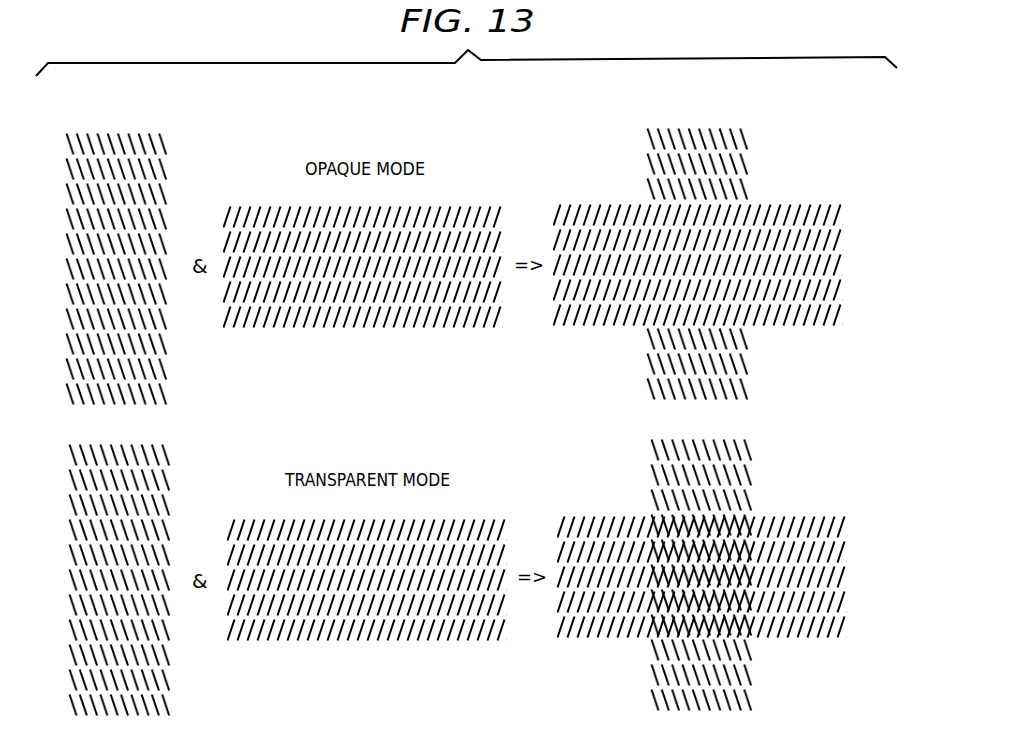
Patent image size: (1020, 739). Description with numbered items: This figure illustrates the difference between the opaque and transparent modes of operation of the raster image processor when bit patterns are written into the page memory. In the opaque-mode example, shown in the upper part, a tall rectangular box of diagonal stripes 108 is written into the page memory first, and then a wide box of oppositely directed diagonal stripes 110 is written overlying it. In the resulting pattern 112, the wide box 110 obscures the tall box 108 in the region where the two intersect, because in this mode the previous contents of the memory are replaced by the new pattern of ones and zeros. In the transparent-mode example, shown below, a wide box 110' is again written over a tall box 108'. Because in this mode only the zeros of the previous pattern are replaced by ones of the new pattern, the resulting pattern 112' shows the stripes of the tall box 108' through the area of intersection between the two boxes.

The tall rectangular box of diagonal stripes 108 is at (441, 260).
The wide box of oppositely directed diagonal stripes 110 is at (548, 245).
The resulting pattern 112 is at (823, 152).
The tall box 108' is at (447, 572).
The wide box 110' is at (556, 558).
The resulting pattern 112' is at (832, 464).